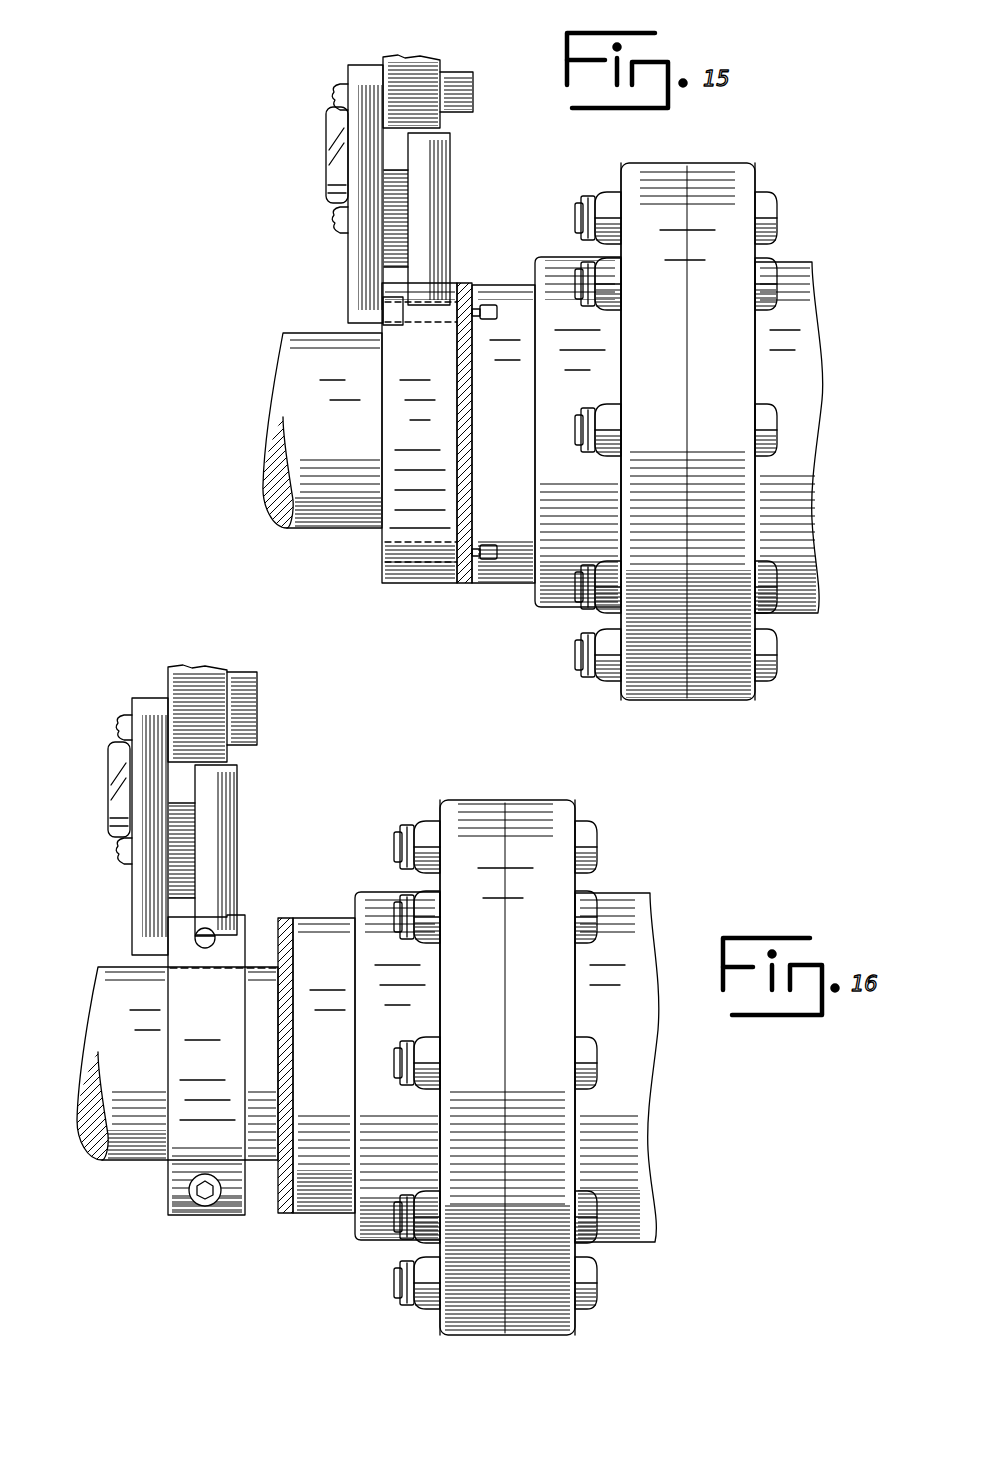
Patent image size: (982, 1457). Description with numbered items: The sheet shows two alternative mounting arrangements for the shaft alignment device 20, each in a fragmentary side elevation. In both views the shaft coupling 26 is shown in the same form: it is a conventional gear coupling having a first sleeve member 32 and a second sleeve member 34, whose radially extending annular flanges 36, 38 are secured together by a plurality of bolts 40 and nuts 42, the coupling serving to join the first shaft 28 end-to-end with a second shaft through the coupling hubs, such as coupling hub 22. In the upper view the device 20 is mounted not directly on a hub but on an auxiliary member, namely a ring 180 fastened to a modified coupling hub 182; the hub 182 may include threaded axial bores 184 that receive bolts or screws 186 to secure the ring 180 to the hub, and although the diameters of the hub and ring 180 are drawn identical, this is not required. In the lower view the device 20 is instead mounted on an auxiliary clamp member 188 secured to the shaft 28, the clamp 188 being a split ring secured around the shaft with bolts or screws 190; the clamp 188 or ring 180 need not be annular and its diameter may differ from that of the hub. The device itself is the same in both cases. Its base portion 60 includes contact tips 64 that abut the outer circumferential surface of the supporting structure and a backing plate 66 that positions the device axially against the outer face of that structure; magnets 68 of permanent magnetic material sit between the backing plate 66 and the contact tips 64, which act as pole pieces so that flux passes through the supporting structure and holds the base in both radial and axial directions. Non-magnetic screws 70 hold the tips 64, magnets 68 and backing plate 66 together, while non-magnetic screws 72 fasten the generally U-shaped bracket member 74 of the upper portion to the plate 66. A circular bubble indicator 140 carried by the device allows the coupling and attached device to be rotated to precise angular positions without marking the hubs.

In FIG. 15, the shaft alignment device 20 is at (292, 112).
In FIG. 16, the shaft alignment device 20 is at (85, 730).
In FIG. 16, the coupling hub 22 is at (292, 1215).
In FIG. 15, the shaft coupling 26 is at (686, 702).
In FIG. 16, the shaft coupling 26 is at (505, 1337).
In FIG. 15, the first shaft 28 is at (282, 532).
In FIG. 16, the first shaft 28 is at (118, 1165).
In FIG. 15, the first sleeve member 32 is at (540, 610).
In FIG. 16, the first sleeve member 32 is at (358, 1242).
In FIG. 15, the second sleeve member 34 is at (815, 610).
In FIG. 16, the second sleeve member 34 is at (638, 1245).
In FIG. 15, the annular flange 36 is at (623, 702).
In FIG. 16, the annular flange 36 is at (441, 1338).
In FIG. 15, the annular flange 38 is at (757, 700).
In FIG. 16, the annular flange 38 is at (577, 1337).
In FIG. 15, the bolts 40 is at (778, 213).
In FIG. 16, the bolts 40 is at (592, 897).
In FIG. 15, the nuts 42 is at (607, 195).
In FIG. 16, the nuts 42 is at (420, 888).
In FIG. 15, the base portion 60 is at (374, 167).
In FIG. 16, the base portion 60 is at (169, 805).
In FIG. 15, the contact tips 64 is at (440, 243).
In FIG. 16, the contact tips 64 is at (232, 838).
In FIG. 15, the backing plate 66 is at (355, 310).
In FIG. 16, the backing plate 66 is at (145, 940).
In FIG. 15, the magnets 68 is at (400, 178).
In FIG. 16, the magnets 68 is at (190, 822).
In FIG. 15, the screws 70 is at (335, 228).
In FIG. 16, the screws 70 is at (125, 850).
In FIG. 15, the screws 72 is at (335, 88).
In FIG. 16, the screws 72 is at (125, 718).
In FIG. 15, the U-shaped bracket member 74 is at (412, 65).
In FIG. 16, the U-shaped bracket member 74 is at (180, 675).
In FIG. 15, the circular bubble indicator 140 is at (326, 150).
In FIG. 16, the circular bubble indicator 140 is at (108, 780).
In FIG. 15, the ring 180 is at (386, 586).
In FIG. 15, the modified coupling hub 182 is at (468, 585).
In FIG. 15, the threaded axial bores 184 is at (484, 304).
In FIG. 15, the bolts or screws 186 is at (383, 537).
In FIG. 16, the auxiliary clamp member 188 is at (168, 1208).
In FIG. 16, the bolts or screws 190 is at (205, 1206).